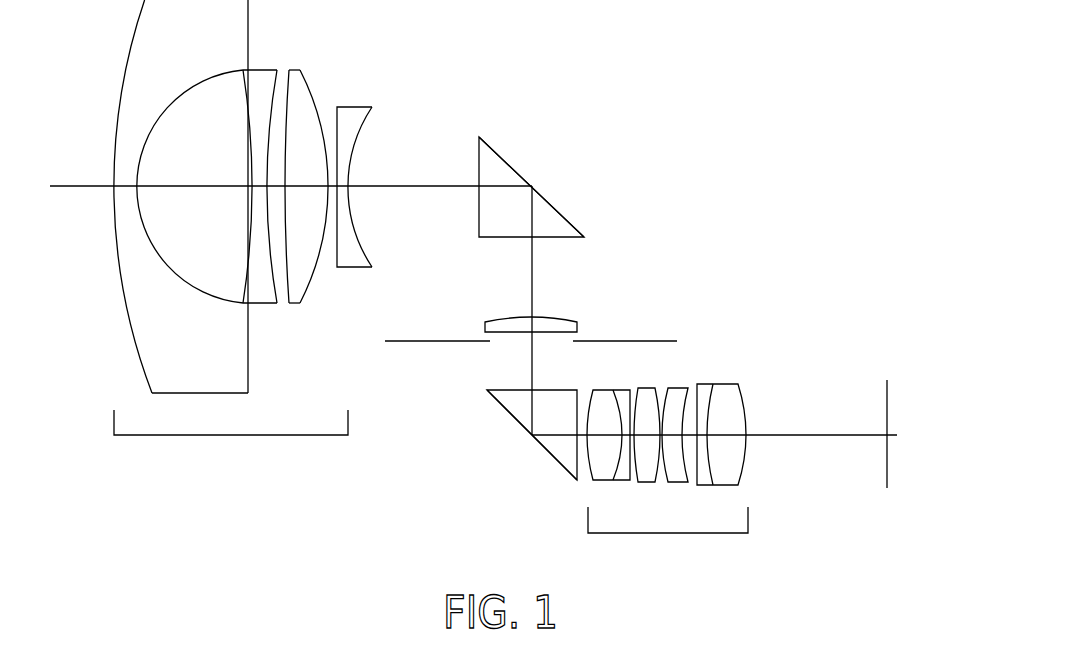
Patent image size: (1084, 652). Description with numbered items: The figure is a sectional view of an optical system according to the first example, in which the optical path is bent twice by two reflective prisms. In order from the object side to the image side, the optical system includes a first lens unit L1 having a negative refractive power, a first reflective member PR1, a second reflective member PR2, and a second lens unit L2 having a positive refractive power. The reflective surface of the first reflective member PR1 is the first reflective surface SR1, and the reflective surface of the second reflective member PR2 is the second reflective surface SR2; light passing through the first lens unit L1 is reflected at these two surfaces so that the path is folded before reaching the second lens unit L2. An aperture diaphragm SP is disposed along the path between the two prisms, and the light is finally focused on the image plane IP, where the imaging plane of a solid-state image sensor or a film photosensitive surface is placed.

The first lens unit L1 is at (243, 235).
The second lens unit L2 is at (667, 476).
The first reflective member PR1 is at (502, 153).
The second reflective member PR2 is at (547, 450).
The first reflective surface SR1 is at (581, 189).
The second reflective surface SR2 is at (503, 438).
The aperture diaphragm SP is at (644, 327).
The image plane IP is at (899, 366).